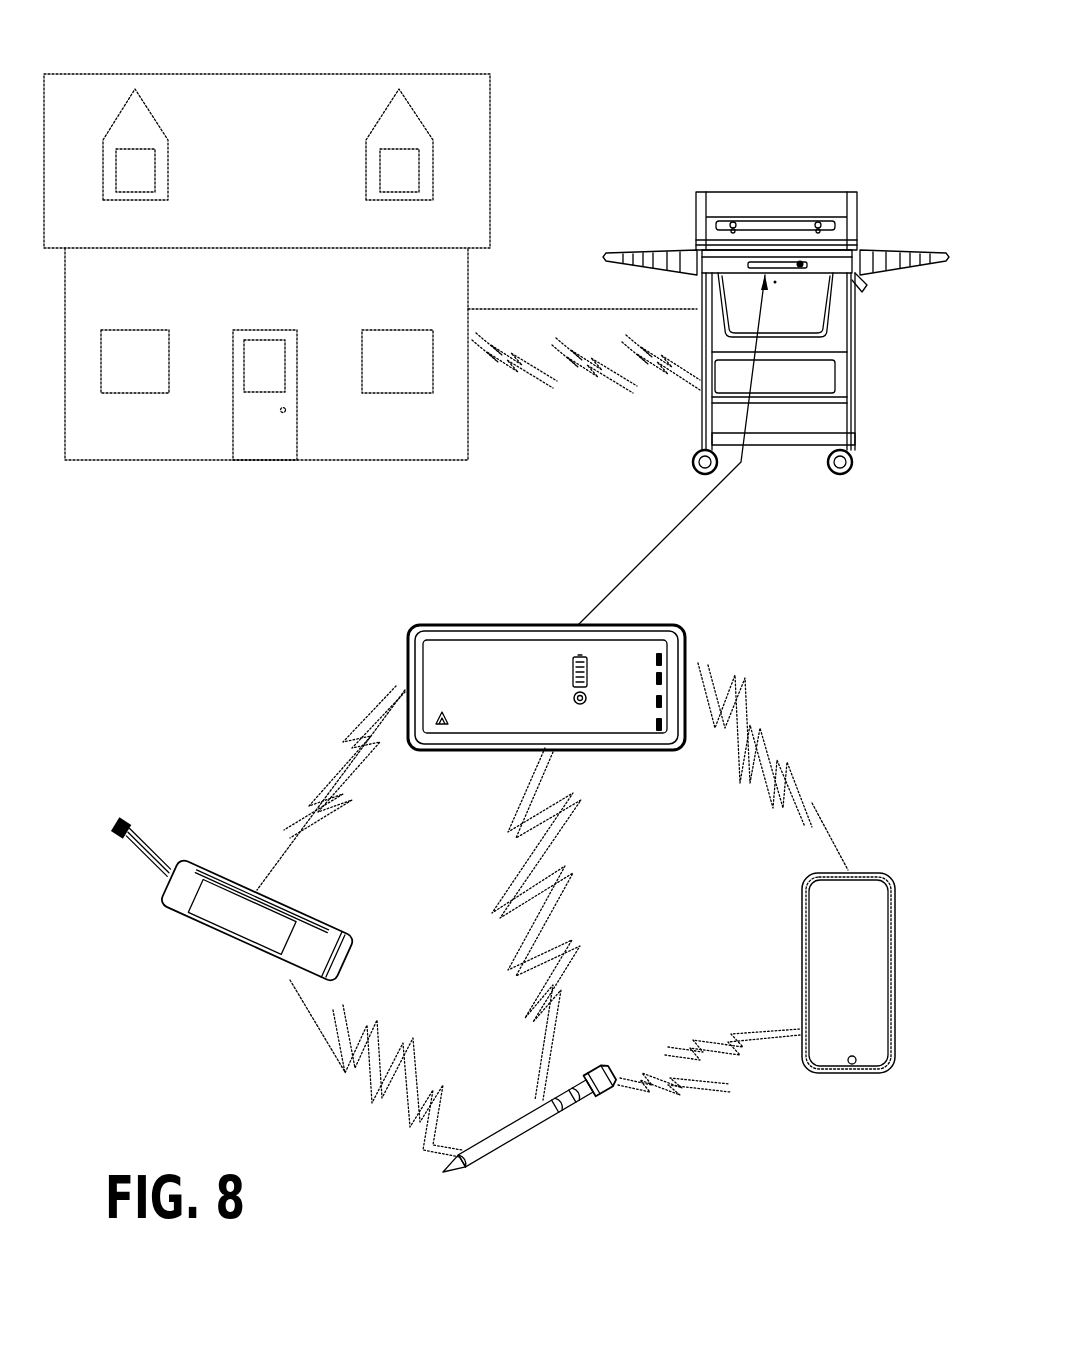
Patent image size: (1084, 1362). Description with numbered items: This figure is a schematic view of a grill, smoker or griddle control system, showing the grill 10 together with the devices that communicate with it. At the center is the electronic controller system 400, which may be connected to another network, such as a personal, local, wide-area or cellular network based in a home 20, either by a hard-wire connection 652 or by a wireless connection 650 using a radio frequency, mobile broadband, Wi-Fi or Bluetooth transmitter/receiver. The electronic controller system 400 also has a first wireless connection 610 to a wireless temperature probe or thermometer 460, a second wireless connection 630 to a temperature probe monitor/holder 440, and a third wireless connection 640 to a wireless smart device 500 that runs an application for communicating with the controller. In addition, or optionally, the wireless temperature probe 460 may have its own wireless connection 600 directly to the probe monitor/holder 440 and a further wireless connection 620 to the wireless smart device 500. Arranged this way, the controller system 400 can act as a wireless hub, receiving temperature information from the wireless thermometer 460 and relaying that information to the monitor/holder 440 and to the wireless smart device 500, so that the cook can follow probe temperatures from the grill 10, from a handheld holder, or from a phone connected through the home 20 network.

The grill 10 is at (727, 195).
The home 20 is at (365, 71).
The electronic controller system 400 is at (455, 628).
The temperature probe monitor/holder 440 is at (177, 853).
The wireless temperature probe 460 is at (510, 1142).
The wireless smart device 500 is at (874, 870).
The wireless connection 600 is at (368, 1078).
The first wireless connection 610 is at (553, 868).
The wireless connection 620 is at (702, 1095).
The second wireless connection 630 is at (322, 753).
The third wireless connection 640 is at (777, 730).
The wireless connection 650 is at (558, 375).
The hard-wire connection 652 is at (534, 310).